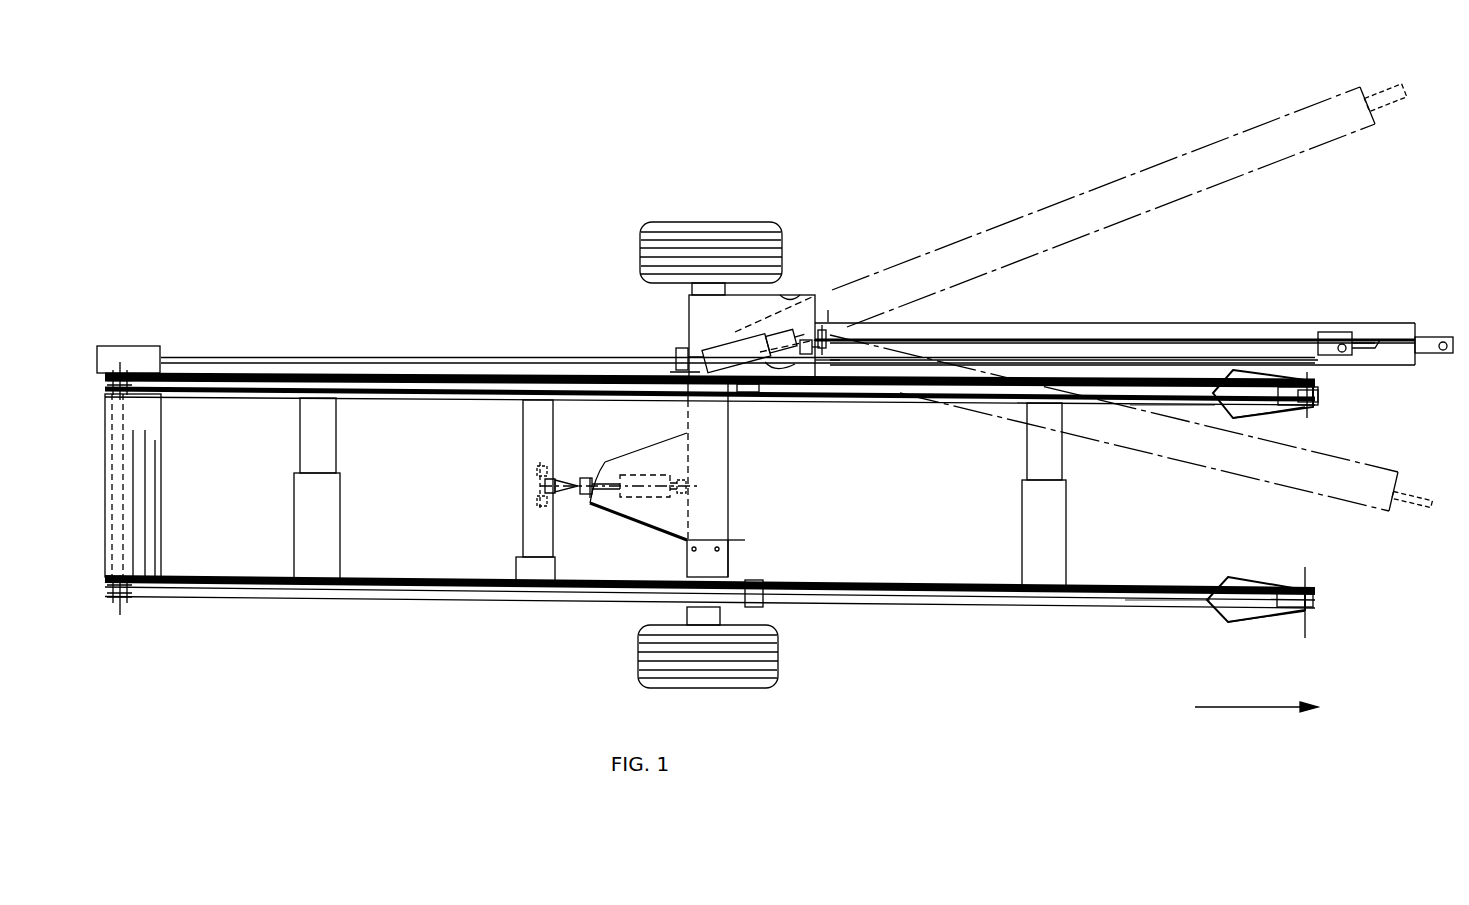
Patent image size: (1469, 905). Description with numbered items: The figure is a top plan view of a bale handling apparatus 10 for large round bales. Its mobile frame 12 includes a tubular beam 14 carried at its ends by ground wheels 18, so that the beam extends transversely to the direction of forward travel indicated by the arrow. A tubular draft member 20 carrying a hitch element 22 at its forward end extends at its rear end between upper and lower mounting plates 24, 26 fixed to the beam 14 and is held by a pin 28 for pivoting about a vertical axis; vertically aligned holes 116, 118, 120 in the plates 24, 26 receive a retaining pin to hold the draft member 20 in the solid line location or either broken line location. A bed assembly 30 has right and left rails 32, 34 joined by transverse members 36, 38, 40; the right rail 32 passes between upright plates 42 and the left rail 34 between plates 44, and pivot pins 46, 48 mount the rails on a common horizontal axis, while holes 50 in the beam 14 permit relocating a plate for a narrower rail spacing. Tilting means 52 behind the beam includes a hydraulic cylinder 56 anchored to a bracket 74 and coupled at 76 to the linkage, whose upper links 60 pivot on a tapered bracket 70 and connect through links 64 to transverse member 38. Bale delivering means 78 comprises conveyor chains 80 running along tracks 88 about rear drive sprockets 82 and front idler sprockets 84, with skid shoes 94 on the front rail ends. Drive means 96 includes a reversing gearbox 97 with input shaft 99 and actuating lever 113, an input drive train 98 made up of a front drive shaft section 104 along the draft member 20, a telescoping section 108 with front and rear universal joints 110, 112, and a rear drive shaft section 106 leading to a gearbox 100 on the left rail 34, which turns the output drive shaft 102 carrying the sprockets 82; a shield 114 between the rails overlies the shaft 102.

The bale handling apparatus 10 is at (569, 182).
The mobile frame 12 is at (738, 517).
The beam 14 is at (728, 562).
The ground wheel 18 is at (768, 230).
The draft member 20 is at (1203, 323).
The hitch element 22 is at (1436, 337).
The upper draft member mounting plate 24 is at (800, 295).
The lower draft member mounting plate 26 is at (783, 290).
The pin 28 is at (748, 338).
The bed assembly 30 is at (538, 606).
The right rail 32 is at (454, 606).
The left rail 34 is at (405, 400).
The transverse member 36 is at (1022, 532).
The transverse member 38 is at (553, 554).
The transverse member 40 is at (340, 520).
The upright plates 42 is at (765, 602).
The upright plates 44 is at (748, 392).
The right pivot pin 46 is at (685, 615).
The left pivot pin 48 is at (720, 405).
The holes 50 is at (710, 549).
The means for actuating pivotal tilting 52 is at (620, 450).
The hydraulic cylinder 56 is at (630, 478).
The upper links 60 is at (560, 482).
The links 64 is at (537, 468).
The tapered bracket 70 is at (662, 530).
The bracket 74 is at (690, 480).
The pivotal coupling 76 is at (583, 478).
The bale delivering means 78 is at (1126, 425).
The conveyor chains 80 is at (1218, 408).
The rear drive sprocket 82 is at (132, 377).
The front idler sprocket 84 is at (1318, 397).
The track 88 is at (481, 399).
The skid shoe 94 is at (1269, 417).
The drive means 96 is at (99, 340).
The reversing gearbox 97 is at (1332, 332).
The input drive train 98 is at (1022, 325).
The input shaft 99 is at (1372, 338).
The gearbox 100 is at (143, 346).
The output drive shaft 102 is at (118, 465).
The front drive shaft section 104 is at (1091, 339).
The rear drive shaft section 106 is at (416, 356).
The telescoping drive shaft section 108 is at (745, 360).
The front universal joint 110 is at (836, 321).
The rear universal joint 112 is at (682, 356).
The actuating lever 113 is at (1346, 344).
The shield 114 is at (157, 497).
The holes 116 is at (826, 348).
The holes 118 is at (822, 310).
The holes 120 is at (826, 365).